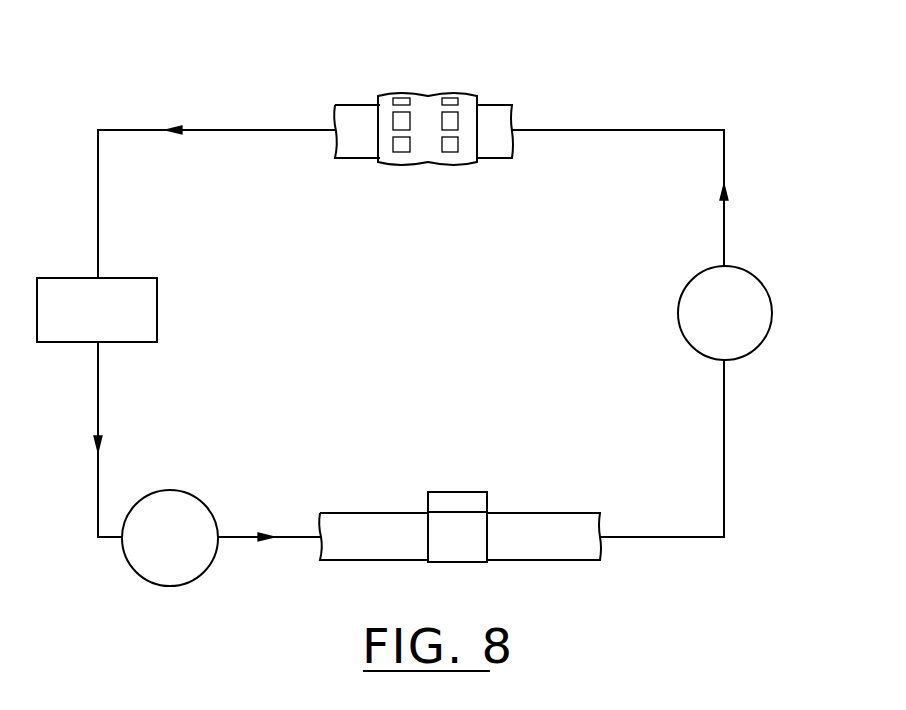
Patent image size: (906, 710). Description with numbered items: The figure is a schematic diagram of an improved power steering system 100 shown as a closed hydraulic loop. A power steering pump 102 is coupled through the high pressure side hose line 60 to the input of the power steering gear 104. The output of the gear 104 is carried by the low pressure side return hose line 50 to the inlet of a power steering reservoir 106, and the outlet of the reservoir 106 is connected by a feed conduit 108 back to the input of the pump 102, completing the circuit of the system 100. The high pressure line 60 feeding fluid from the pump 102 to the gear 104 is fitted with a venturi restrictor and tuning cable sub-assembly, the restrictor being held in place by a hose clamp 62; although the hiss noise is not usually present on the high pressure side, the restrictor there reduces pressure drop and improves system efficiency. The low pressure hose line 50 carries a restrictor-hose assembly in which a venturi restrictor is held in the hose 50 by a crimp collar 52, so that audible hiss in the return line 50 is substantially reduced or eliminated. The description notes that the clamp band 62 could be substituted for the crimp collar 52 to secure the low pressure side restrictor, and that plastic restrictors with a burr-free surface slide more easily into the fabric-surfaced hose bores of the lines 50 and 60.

The power steering system 100 is at (703, 59).
The low pressure side return hose line 50 is at (353, 159).
The crimp collar 52 is at (431, 92).
The high pressure side hose line 60 is at (297, 532).
The hose clamp 62 is at (482, 493).
The power steering pump 102 is at (189, 493).
The power steering gear 104 is at (684, 288).
The power steering reservoir 106 is at (158, 293).
The feed conduit 108 is at (98, 403).